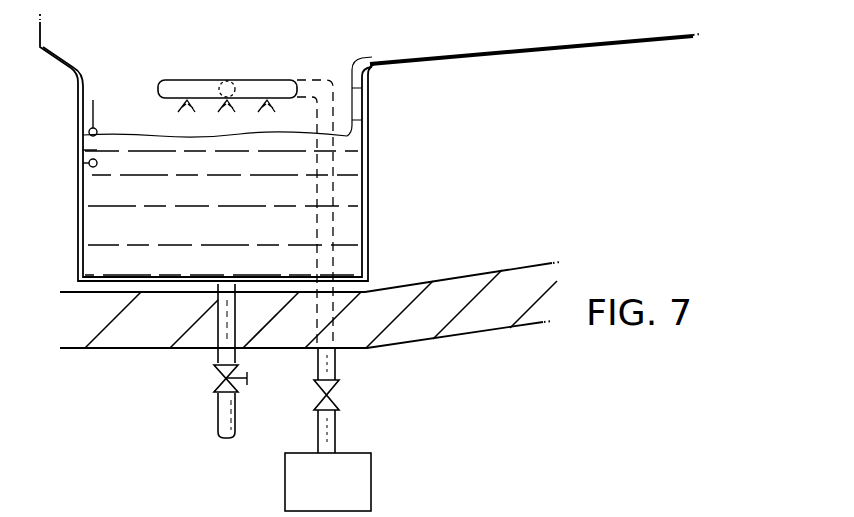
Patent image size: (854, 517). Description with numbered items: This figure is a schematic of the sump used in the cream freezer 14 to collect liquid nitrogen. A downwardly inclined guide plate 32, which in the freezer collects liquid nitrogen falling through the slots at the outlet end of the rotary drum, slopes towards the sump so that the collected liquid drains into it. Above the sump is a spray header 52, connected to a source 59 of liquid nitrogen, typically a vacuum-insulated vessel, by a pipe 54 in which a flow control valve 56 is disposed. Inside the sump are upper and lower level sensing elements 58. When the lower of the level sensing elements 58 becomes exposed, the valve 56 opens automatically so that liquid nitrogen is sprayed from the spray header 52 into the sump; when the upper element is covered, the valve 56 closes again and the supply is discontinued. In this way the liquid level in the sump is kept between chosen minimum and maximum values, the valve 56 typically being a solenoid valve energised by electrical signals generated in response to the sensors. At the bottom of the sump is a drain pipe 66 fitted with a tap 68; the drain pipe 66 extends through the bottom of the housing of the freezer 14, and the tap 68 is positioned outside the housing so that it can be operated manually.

The cream freezer 14 is at (494, 333).
The guide plate 32 is at (518, 57).
The spray header 52 is at (167, 85).
The pipe 54 is at (231, 82).
The flow control valve 56 is at (334, 404).
The level sensing elements 58 is at (90, 135).
The source of liquid nitrogen 59 is at (341, 500).
The drain pipe 66 is at (217, 357).
The tap 68 is at (240, 391).